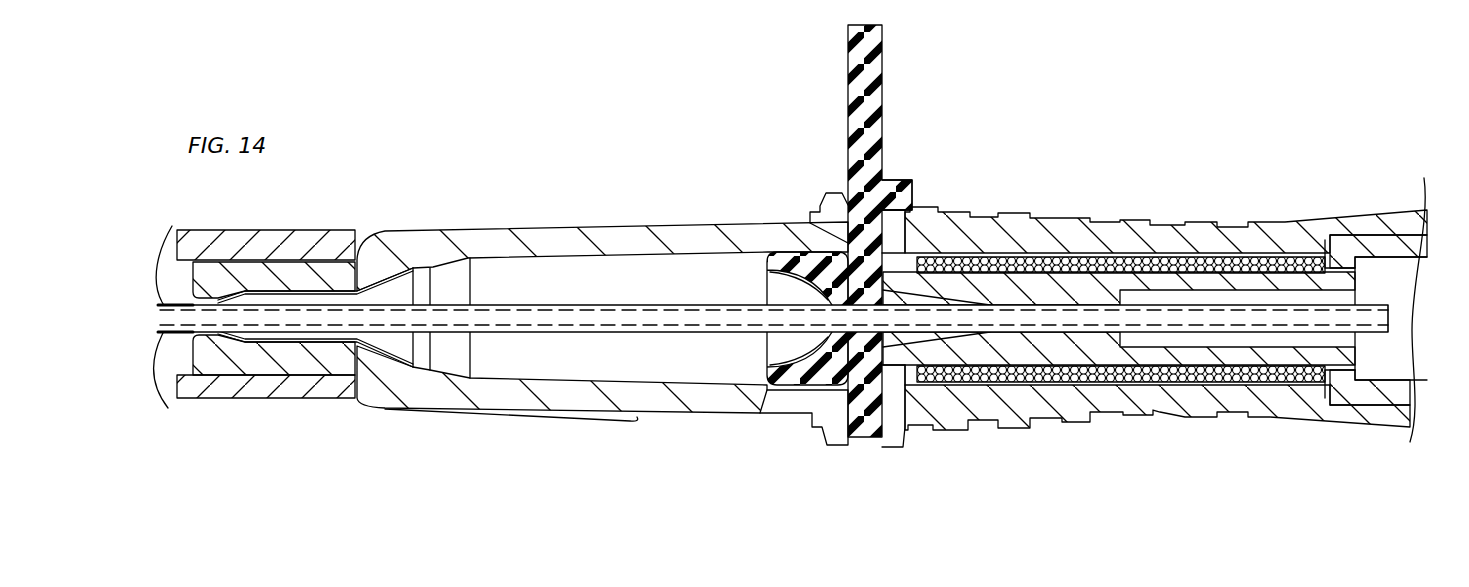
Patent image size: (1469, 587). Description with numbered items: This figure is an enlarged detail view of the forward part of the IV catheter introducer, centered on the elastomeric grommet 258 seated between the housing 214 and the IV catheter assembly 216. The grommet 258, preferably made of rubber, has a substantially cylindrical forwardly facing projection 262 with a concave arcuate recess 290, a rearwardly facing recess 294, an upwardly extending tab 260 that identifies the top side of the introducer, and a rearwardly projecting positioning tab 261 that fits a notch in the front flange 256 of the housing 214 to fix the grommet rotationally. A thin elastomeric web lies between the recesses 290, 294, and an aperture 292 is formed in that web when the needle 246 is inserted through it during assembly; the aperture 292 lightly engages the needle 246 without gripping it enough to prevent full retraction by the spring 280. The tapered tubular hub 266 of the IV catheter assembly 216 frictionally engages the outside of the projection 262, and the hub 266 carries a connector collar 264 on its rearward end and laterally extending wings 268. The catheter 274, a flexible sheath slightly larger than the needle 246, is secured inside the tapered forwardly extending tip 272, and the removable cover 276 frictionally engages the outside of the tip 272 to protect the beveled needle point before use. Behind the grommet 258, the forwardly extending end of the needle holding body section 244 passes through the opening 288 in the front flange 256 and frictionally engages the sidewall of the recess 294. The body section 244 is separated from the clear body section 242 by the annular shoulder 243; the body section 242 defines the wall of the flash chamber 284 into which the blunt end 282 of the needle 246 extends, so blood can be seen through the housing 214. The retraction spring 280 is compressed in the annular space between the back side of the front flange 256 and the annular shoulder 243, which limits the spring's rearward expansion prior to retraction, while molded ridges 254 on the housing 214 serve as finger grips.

The housing 214 is at (1154, 311).
The IV catheter assembly 216 is at (489, 309).
The body section 242 is at (1367, 392).
The annular shoulder 243 is at (1325, 388).
The body section 244 is at (1092, 352).
The needle 246 is at (178, 326).
The molded ridges 254 is at (1008, 228).
The front flange 256 is at (857, 420).
The elastomeric grommet 258 is at (888, 254).
The upwardly extending tab 260 is at (875, 80).
The rearwardly projecting positioning tab 261 is at (912, 194).
The forwardly facing projection 262 is at (773, 317).
The connector collar 264 is at (835, 195).
The tapered tubular hub 266 is at (468, 230).
The wings 268 is at (578, 418).
The tip 272 is at (240, 277).
The catheter 274 is at (178, 292).
The cover 276 is at (285, 392).
The retraction spring 280 is at (1077, 257).
The blunt end 282 is at (1390, 317).
The flash chamber 284 is at (1400, 366).
The opening 288 is at (886, 258).
The concave arcuate recess 290 is at (772, 288).
The aperture 292 is at (792, 348).
The rearwardly facing recess 294 is at (888, 362).